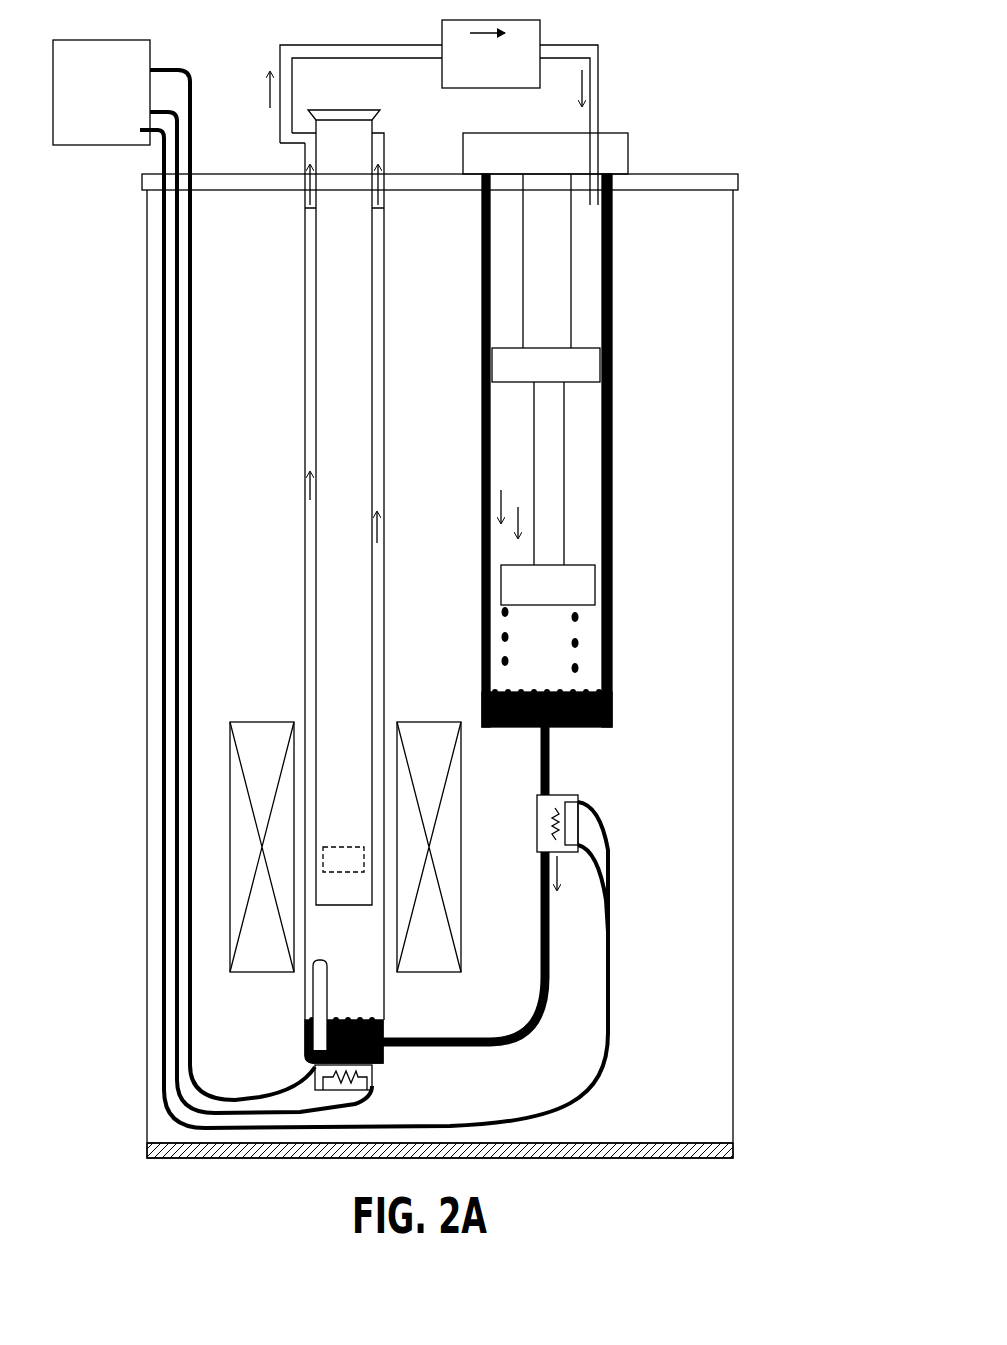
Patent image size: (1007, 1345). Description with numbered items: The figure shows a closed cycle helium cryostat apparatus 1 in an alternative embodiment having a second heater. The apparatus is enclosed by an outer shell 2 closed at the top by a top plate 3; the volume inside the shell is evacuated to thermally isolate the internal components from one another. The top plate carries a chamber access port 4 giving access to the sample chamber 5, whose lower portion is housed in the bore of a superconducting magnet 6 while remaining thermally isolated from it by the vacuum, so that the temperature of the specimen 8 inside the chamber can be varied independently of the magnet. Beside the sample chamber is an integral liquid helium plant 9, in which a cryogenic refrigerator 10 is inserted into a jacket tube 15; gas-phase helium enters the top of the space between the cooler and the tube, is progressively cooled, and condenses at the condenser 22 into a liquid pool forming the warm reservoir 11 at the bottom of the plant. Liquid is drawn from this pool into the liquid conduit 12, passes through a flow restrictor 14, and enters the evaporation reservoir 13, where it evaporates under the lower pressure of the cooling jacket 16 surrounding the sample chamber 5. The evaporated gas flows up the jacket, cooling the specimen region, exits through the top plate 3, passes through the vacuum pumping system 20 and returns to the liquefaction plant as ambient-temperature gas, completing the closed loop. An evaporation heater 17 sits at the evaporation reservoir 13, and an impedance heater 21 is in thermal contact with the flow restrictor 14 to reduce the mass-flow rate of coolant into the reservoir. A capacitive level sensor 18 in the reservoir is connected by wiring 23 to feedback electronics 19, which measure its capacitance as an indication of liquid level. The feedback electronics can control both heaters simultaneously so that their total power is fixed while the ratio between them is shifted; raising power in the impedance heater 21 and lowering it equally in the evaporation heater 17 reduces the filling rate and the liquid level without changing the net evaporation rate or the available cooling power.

The cryostat apparatus 1 is at (737, 74).
The outer shell 2 is at (735, 597).
The top plate 3 is at (688, 174).
The chamber access port 4 is at (346, 112).
The sample chamber 5 is at (348, 376).
The superconducting magnet 6 is at (260, 735).
The specimen 8 is at (342, 846).
The liquid helium plant 9 is at (650, 313).
The cryogenic refrigerator 10 is at (558, 268).
The warm reservoir 11 is at (612, 688).
The liquid conduit 12 is at (550, 765).
The evaporation reservoir 13 is at (383, 1055).
The flow restrictor 14 is at (545, 818).
The jacket tube 15 is at (612, 408).
The cooling jacket 16 is at (310, 413).
The evaporation heater 17 is at (372, 1078).
The capacitive level sensor 18 is at (313, 1005).
The feedback electronics 19 is at (101, 92).
The vacuum pumping system 20 is at (491, 54).
The impedance heater 21 is at (575, 852).
The condenser 22 is at (583, 585).
The wiring 23 is at (178, 633).